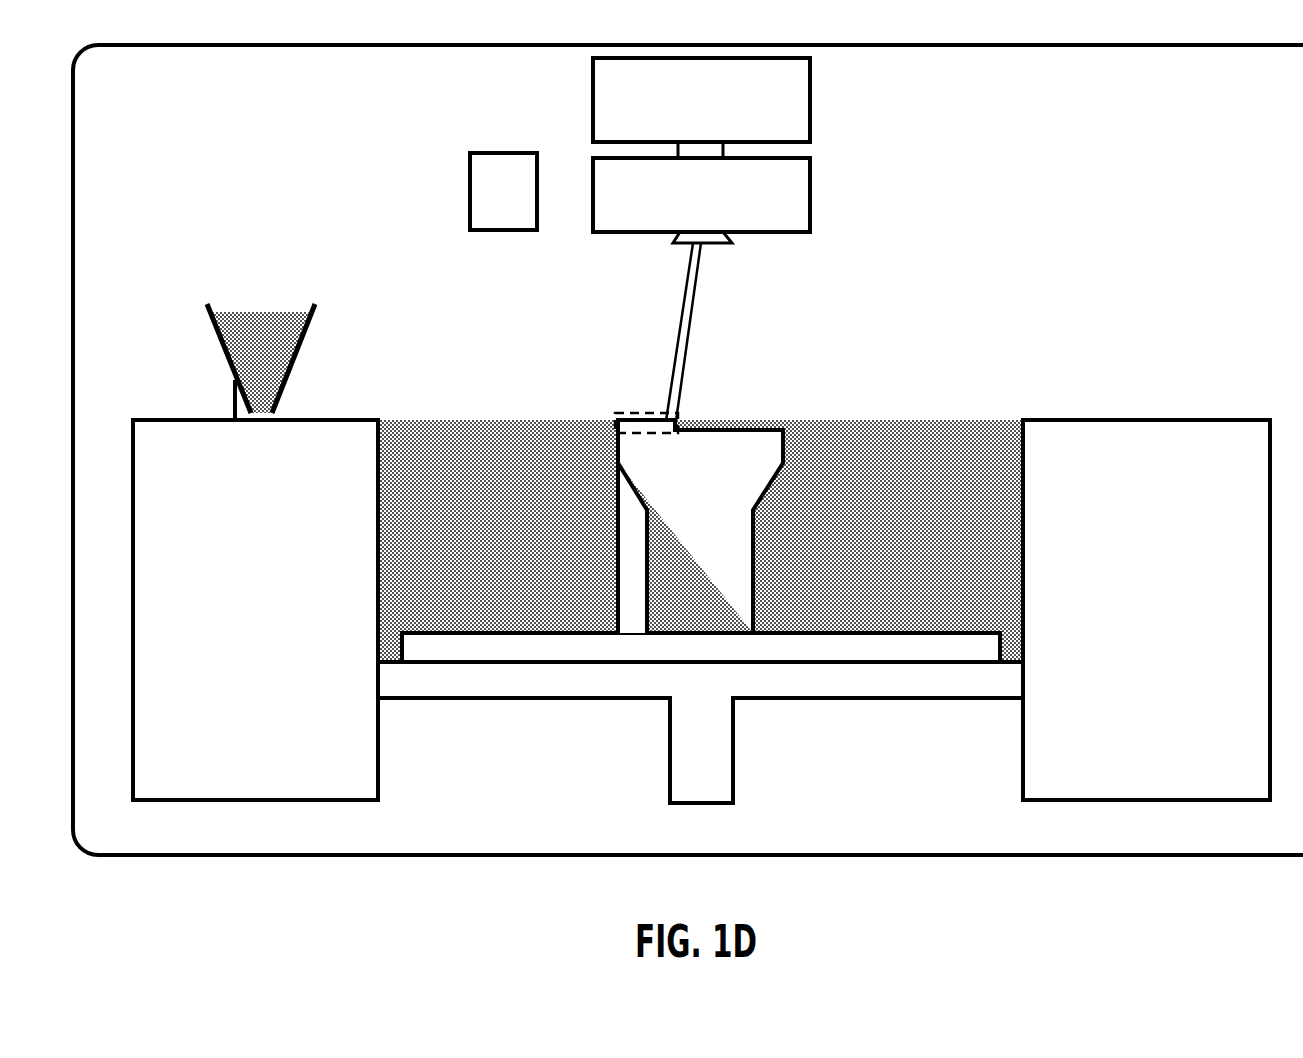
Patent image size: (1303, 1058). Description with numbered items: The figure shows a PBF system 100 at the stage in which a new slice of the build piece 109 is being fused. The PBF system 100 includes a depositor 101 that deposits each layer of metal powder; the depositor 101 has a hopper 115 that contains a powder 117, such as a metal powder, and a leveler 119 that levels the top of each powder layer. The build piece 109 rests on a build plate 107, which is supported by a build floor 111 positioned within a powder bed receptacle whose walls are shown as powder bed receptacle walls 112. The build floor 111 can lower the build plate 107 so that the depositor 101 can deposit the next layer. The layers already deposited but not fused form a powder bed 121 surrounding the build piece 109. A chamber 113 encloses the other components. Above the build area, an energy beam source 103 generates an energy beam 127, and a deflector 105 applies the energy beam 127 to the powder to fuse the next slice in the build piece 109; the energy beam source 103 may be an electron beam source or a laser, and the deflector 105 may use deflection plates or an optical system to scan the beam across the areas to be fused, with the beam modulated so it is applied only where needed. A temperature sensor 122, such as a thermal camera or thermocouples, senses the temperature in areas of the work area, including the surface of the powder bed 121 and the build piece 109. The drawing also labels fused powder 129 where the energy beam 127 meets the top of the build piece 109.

The PBF system 100 is at (986, 879).
The depositor 101 is at (197, 317).
The energy beam source 103 is at (767, 131).
The deflector 105 is at (778, 207).
The build plate 107 is at (967, 627).
The build piece 109 is at (785, 433).
The build floor 111 is at (792, 698).
The powder bed receptacle walls 112 is at (358, 639).
The chamber 113 is at (258, 846).
The hopper 115 is at (297, 353).
The powder 117 is at (257, 338).
The leveler 119 is at (233, 395).
The powder bed 121 is at (965, 450).
The temperature sensor 122 is at (470, 154).
The energy beam 127 is at (680, 293).
The fused powder 129 is at (633, 412).